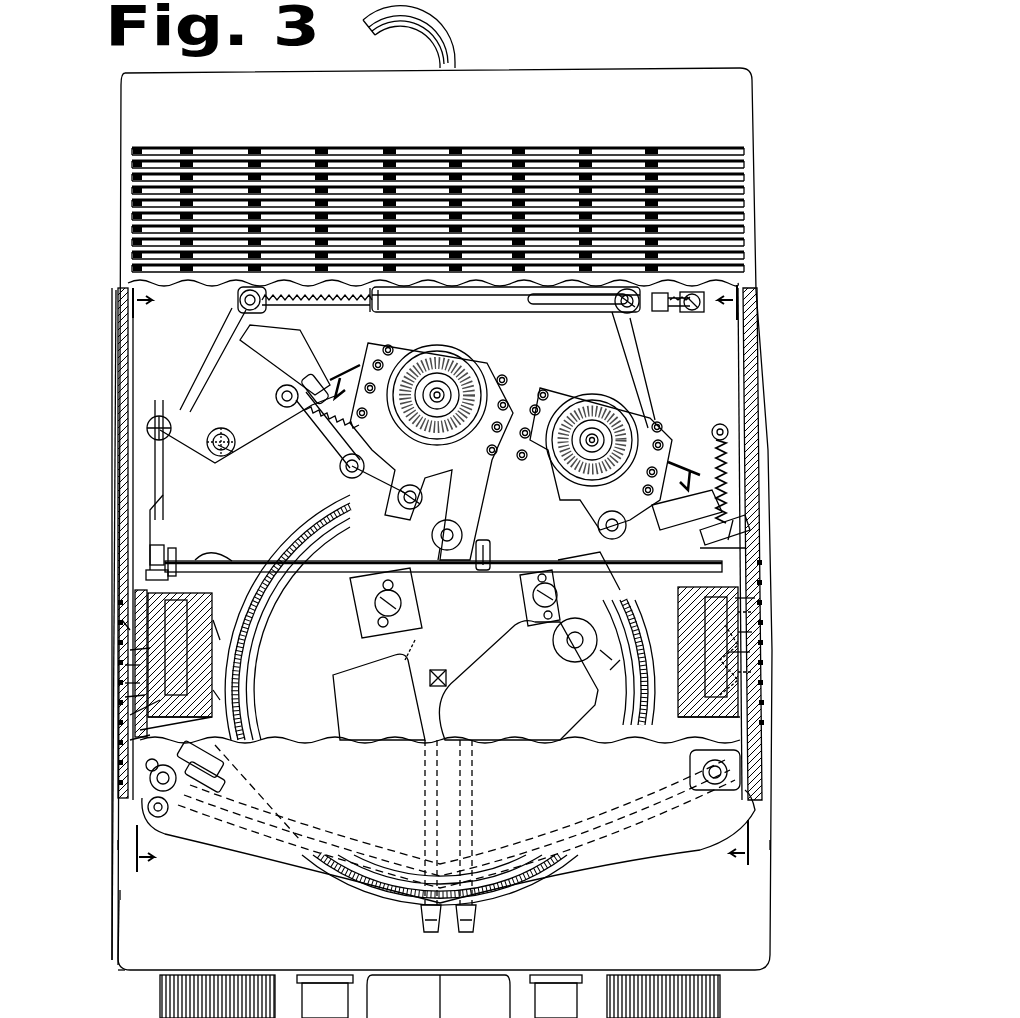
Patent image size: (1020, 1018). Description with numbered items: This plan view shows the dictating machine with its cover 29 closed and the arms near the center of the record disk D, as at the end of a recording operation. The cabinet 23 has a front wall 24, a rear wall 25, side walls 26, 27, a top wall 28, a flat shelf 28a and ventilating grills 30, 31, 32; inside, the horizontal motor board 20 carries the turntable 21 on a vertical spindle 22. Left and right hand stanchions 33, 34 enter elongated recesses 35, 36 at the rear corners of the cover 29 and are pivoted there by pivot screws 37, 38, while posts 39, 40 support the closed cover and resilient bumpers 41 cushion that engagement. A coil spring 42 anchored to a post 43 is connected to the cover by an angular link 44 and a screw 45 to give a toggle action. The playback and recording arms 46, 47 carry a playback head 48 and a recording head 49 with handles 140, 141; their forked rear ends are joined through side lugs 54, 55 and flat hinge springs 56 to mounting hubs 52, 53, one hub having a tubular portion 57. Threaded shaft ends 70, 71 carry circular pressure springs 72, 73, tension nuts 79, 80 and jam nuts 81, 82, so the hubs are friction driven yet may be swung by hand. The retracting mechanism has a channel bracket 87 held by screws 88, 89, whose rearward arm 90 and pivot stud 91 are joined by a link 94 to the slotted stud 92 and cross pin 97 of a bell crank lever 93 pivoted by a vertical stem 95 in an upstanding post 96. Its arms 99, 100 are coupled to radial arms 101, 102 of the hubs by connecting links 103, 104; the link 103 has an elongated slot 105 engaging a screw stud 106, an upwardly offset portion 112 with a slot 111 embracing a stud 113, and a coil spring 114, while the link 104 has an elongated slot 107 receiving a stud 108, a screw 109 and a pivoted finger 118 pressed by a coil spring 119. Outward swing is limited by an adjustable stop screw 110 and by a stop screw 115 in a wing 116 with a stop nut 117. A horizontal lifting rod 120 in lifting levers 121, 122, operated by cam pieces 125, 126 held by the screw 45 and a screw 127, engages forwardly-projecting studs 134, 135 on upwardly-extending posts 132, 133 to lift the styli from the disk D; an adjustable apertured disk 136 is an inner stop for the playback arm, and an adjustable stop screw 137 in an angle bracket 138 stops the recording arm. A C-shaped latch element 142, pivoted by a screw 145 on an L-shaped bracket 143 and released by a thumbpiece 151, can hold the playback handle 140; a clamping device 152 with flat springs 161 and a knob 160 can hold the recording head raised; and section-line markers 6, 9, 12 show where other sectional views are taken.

The motor board 20 is at (135, 372).
The turntable 21 is at (330, 880).
The vertical spindle 22 is at (440, 668).
The dictating machine cabinet 23 is at (108, 900).
The front wall 24 is at (140, 978).
The rear wall 25 is at (578, 68).
The side wall 26 is at (118, 836).
The side wall 27 is at (770, 836).
The top wall 28 is at (130, 136).
The flat shelf 28a is at (130, 934).
The cover 29 is at (258, 850).
The ventilating grill 30 is at (125, 640).
The ventilating grill 31 is at (364, 152).
The ventilating grill 32 is at (766, 572).
The left hand stanchion 33 is at (140, 595).
The right hand stanchion 34 is at (760, 596).
The recess 35 is at (170, 717).
The recess 36 is at (705, 717).
The pivot screw 37 is at (130, 650).
The pivot screw 38 is at (758, 634).
The post 39 is at (148, 806).
The post 40 is at (690, 768).
The resilient bumpers 41 is at (150, 782).
The coil spring 42 is at (730, 462).
The post 43 is at (730, 430).
The link 44 is at (752, 528).
The screw 45 is at (760, 674).
The playback arm 46 is at (378, 560).
The recording arm 47 is at (525, 597).
The playback head 48 is at (338, 695).
The recording head 49 is at (492, 665).
The mounting hub 52 is at (478, 337).
The mounting hub 53 is at (632, 372).
The side lugs 54 is at (388, 344).
The side lugs 55 is at (545, 400).
The flat hinge springs 56 is at (372, 357).
The tubular portion 57 is at (605, 640).
The threaded reduced upper end 70 is at (446, 390).
The threaded reduced upper end 71 is at (600, 442).
The circular pressure spring 72 is at (424, 370).
The circular pressure spring 73 is at (588, 430).
The tension nut 79 is at (445, 372).
The tension nut 80 is at (612, 436).
The jam nut 81 is at (433, 370).
The jam nut 82 is at (600, 425).
The channel bracket 87 is at (130, 715).
The screw 88 is at (238, 545).
The screw 89 is at (218, 690).
The rearwardly-extending arm 90 is at (152, 545).
The pivot stud 91 is at (146, 568).
The slotted stud 92 is at (150, 400).
The bell crank lever 93 is at (165, 450).
The link 94 is at (148, 512).
The vertical stem 95 is at (218, 456).
The upstanding post 96 is at (236, 455).
The cross pin 97 is at (145, 427).
The rearwardly-extending arm 99 is at (215, 350).
The laterally extending arm 100 is at (275, 396).
The radial arm 101 is at (634, 345).
The radial arm 102 is at (380, 470).
The connecting link 103 is at (506, 299).
The connecting link 104 is at (332, 448).
The elongated slot 105 is at (565, 305).
The screw stud 106 is at (615, 310).
The elongated slot 107 is at (338, 468).
The stud 108 is at (316, 380).
The screw 109 is at (345, 478).
The adjustable stop screw 110 is at (760, 616).
The slot 111 is at (238, 302).
The upwardly offset portion 112 is at (340, 310).
The stud 113 is at (242, 312).
The coil spring 114 is at (300, 312).
The stop screw 115 is at (125, 697).
The wing 116 is at (125, 683).
The stop nut 117 is at (125, 665).
The pivoted finger 118 is at (292, 384).
The coil spring 119 is at (312, 428).
The horizontal lifting rod 120 is at (340, 578).
The lifting lever 121 is at (176, 550).
The lifting lever 122 is at (750, 550).
The cam piece 125 is at (130, 740).
The cam piece 126 is at (755, 654).
The screw 127 is at (615, 670).
The upwardly-extending post 132 is at (432, 532).
The upwardly-extending post 133 is at (622, 519).
The forwardly-projecting stud 134 is at (457, 580).
The forwardly-projecting stud 135 is at (600, 570).
The adjustable apertured disk 136 is at (483, 540).
The adjustable stop screw 137 is at (655, 312).
The upstanding angle bracket 138 is at (697, 312).
The handle 140 is at (420, 928).
The handle 141 is at (476, 928).
The C-shaped latch element 142 is at (218, 775).
The L-shaped bracket 143 is at (145, 765).
The screw 145 is at (218, 760).
The thumbpiece 151 is at (205, 838).
The clamping device 152 is at (735, 490).
The knob 160 is at (722, 1003).
The flat springs 161 is at (735, 522).
The record disk D is at (375, 892).
The section line 6 is at (730, 582).
The section line 9 is at (145, 585).
The section line 12 is at (515, 434).